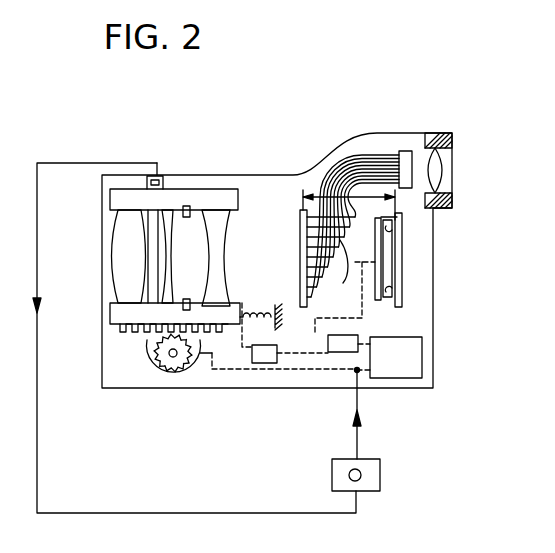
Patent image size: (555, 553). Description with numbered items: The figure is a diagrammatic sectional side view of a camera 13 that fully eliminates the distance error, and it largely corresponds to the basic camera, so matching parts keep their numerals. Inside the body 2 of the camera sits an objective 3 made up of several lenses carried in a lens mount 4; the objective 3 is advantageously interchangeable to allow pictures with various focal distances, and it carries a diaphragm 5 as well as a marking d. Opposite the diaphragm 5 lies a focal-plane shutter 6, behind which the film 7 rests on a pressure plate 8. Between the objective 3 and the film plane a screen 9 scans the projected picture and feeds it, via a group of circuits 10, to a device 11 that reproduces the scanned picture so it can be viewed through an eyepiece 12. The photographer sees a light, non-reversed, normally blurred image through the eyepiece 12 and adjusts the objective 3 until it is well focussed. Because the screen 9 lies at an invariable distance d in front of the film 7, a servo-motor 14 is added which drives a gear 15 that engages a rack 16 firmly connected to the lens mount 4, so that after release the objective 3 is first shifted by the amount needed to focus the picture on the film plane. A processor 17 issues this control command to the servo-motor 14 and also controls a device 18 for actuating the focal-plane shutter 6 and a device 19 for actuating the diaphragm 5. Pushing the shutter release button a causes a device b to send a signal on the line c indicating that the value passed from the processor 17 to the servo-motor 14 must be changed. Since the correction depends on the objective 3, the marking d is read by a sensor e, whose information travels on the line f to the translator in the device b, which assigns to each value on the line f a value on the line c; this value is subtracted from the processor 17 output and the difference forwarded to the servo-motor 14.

The body of the camera 2 is at (405, 389).
The objective 3 is at (105, 256).
The lens mount 4 is at (120, 199).
The diaphragm 5 is at (186, 205).
The focal-plane shutter 6 is at (380, 285).
The film 7 is at (392, 247).
The pressure plate 8 is at (400, 272).
The screen 9 is at (300, 255).
The group of circuits 10 is at (345, 298).
The device 11 is at (403, 160).
The eyepiece 12 is at (440, 163).
The camera 13 is at (285, 102).
The servo-motor 14 is at (147, 357).
The gear 15 is at (178, 373).
The rack 16 is at (120, 335).
The processor 17 is at (396, 357).
The device for the actuation of the focal-plane shutter 18 is at (343, 353).
The device for the actuation of a diaphragm 19 is at (265, 364).
The shutter release button a is at (349, 475).
The device b is at (361, 475).
The line c is at (360, 432).
The marking d is at (150, 183).
The sensor e is at (158, 172).
The line f is at (128, 513).